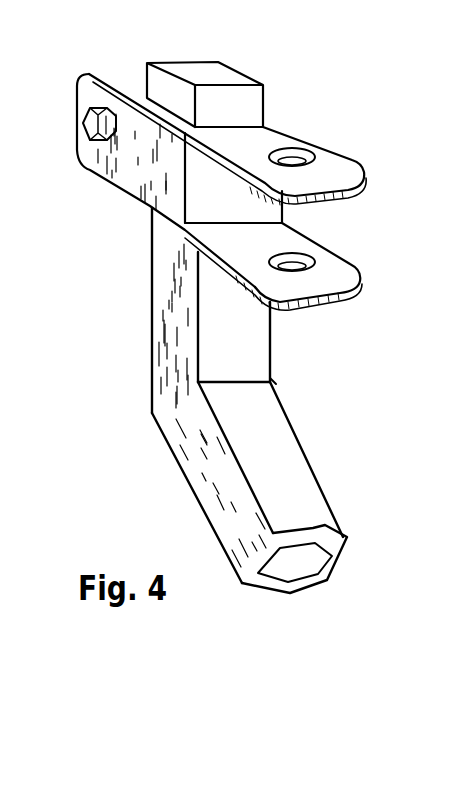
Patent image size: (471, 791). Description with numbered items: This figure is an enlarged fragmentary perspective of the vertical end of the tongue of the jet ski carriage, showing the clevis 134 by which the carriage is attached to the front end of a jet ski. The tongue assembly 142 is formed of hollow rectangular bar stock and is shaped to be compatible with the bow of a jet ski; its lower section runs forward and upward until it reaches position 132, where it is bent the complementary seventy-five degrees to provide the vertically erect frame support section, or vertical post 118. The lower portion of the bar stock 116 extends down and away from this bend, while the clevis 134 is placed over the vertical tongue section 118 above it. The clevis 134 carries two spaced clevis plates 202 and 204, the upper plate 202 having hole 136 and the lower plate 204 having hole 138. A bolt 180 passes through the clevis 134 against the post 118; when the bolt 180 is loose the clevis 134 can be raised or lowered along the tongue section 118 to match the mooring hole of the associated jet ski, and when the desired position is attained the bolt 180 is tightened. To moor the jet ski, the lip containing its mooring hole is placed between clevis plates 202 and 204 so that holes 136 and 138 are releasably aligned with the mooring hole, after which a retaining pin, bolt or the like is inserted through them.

The tubular post lower section 116 is at (310, 455).
The vertical post 118 is at (160, 266).
The bend position 132 is at (272, 380).
The clevis 134 is at (217, 192).
The clevis hole 136 is at (300, 148).
The clevis hole 138 is at (292, 258).
The tongue assembly 142 is at (223, 75).
The bolt 180 is at (90, 125).
The clevis plate 202 is at (240, 139).
The clevis plate 204 is at (301, 252).